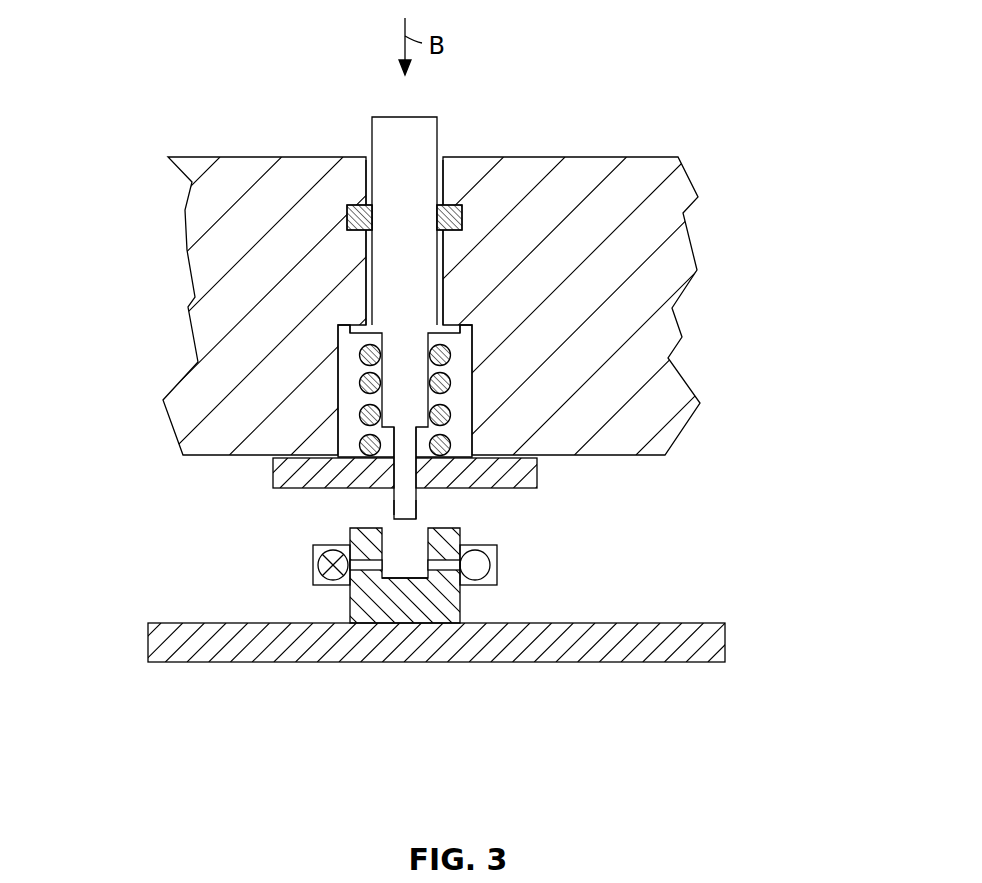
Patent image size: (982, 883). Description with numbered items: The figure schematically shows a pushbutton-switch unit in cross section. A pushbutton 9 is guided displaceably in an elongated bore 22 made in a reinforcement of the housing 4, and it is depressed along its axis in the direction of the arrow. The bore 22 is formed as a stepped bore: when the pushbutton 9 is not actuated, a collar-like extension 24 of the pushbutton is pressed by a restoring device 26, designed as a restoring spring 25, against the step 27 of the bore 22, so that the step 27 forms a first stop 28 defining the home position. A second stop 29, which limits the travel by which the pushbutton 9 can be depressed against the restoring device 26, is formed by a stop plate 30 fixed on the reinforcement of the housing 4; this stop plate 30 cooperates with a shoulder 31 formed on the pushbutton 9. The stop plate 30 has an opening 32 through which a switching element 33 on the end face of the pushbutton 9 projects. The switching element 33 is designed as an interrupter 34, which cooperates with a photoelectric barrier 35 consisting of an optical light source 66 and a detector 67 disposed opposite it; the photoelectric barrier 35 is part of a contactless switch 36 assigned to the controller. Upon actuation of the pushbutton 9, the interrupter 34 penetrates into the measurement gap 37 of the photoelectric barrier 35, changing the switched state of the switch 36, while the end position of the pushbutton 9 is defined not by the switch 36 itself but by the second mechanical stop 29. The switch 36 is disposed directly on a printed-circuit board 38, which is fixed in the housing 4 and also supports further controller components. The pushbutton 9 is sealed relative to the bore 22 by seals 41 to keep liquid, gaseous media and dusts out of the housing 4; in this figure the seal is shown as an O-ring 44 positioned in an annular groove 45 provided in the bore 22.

The housing 4 is at (668, 197).
The pushbutton 9 is at (417, 145).
The elongated bore 22 is at (437, 185).
The O-ring 44 is at (347, 218).
The annular groove 45 is at (350, 207).
The seal 41 is at (466, 218).
The first stop 28 is at (357, 318).
The shoulder 31 is at (370, 410).
The second stop 29 is at (356, 454).
The collar-like extension 24 is at (470, 327).
The step 27 is at (447, 323).
The restoring spring 25 is at (445, 377).
The restoring device 26 is at (452, 410).
The stop plate 30 is at (290, 470).
The opening 32 is at (394, 480).
The switching element 33 is at (393, 507).
The interrupter 34 is at (403, 507).
The measurement gap 37 is at (412, 600).
The photoelectric barrier 35 is at (372, 582).
The contactless switch 36 is at (405, 565).
The optical light source 66 is at (325, 568).
The detector 67 is at (480, 565).
The printed-circuit board 38 is at (203, 650).